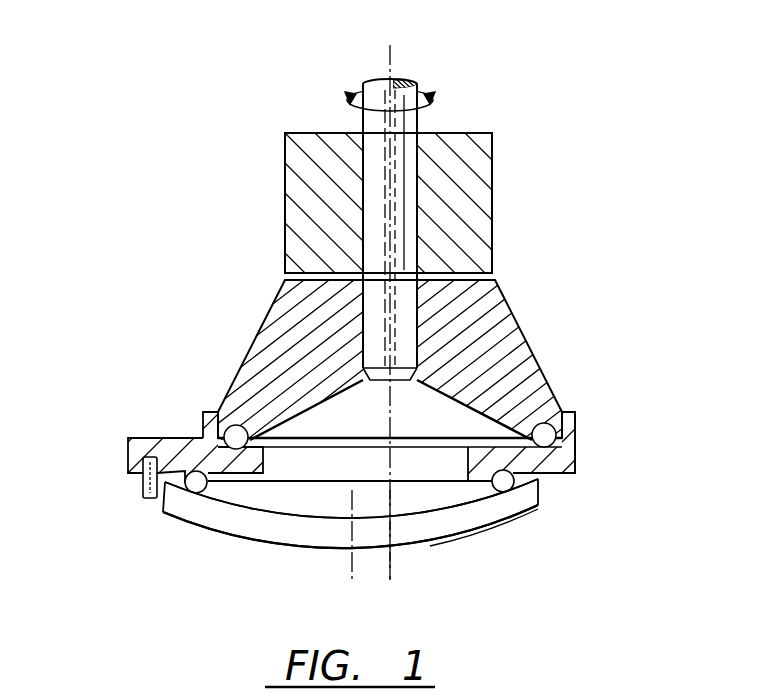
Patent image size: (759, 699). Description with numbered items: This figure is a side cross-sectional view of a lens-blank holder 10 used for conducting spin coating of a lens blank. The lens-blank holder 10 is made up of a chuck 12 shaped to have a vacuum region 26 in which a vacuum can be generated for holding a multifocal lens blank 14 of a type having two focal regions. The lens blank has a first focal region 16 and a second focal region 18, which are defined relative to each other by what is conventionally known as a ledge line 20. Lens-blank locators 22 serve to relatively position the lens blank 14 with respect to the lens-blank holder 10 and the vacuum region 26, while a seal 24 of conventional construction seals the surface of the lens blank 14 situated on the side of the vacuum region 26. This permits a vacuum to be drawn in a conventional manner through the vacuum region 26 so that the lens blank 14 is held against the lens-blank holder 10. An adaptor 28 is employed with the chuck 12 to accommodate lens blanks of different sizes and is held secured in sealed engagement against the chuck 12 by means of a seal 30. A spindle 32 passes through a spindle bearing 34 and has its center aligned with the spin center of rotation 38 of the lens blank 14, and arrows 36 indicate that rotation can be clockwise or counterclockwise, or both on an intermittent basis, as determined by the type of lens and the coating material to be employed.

The lens-blank holder 10 is at (624, 296).
The chuck 12 is at (505, 300).
The multifocal lens blank 14 is at (303, 547).
The first focal region 16 is at (233, 533).
The second focal region 18 is at (435, 548).
The ledge line 20 is at (388, 557).
The lens-blank locators 22 is at (143, 485).
The seal 24 is at (167, 512).
The vacuum region 26 is at (423, 410).
The adaptor 28 is at (575, 455).
The seal 30 is at (576, 423).
The spindle 32 is at (417, 193).
The spindle bearing 34 is at (495, 218).
The arrows 36 is at (436, 93).
The spin center of rotation 38 is at (393, 70).